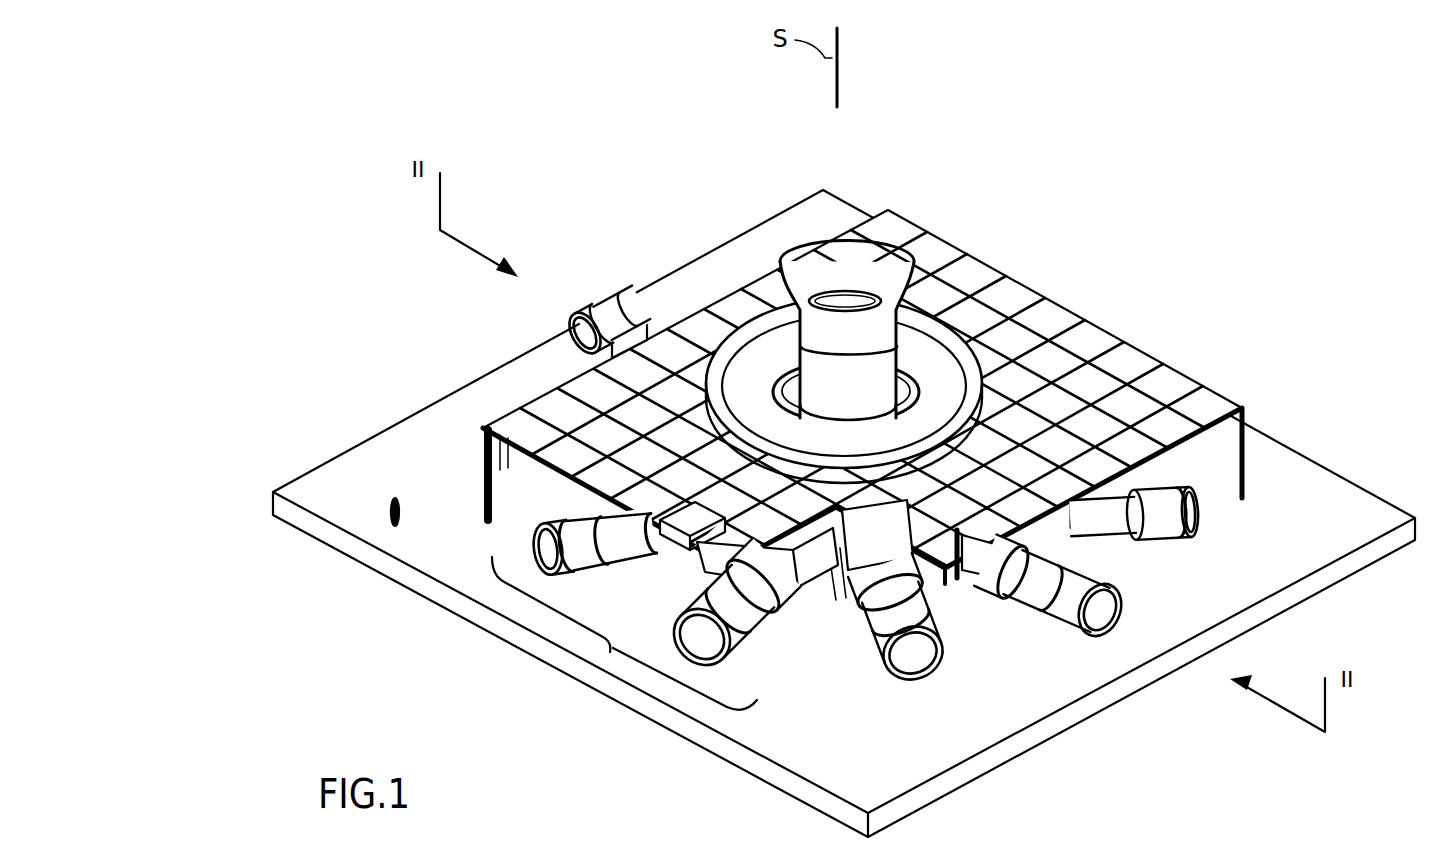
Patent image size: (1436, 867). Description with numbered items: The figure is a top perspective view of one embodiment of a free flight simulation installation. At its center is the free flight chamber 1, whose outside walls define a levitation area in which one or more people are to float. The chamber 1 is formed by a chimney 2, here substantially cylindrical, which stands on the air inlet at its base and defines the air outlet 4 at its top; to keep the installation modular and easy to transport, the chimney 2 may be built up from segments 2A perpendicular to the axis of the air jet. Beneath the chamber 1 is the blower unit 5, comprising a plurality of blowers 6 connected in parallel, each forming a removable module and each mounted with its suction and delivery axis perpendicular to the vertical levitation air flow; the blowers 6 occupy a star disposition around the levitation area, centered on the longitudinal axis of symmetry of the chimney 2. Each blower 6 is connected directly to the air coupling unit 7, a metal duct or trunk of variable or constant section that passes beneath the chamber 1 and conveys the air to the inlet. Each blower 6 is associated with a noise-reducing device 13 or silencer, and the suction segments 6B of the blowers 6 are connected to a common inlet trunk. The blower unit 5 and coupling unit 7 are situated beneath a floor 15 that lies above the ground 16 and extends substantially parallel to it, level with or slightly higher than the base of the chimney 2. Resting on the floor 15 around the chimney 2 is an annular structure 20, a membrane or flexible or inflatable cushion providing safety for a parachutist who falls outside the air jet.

The free flight chamber 1 is at (862, 357).
The chimney 2 is at (941, 308).
The segments 2A is at (917, 258).
The air outlet 4 is at (888, 278).
The blower unit 5 is at (608, 652).
The blower 6 is at (890, 500).
The suction segments 6B is at (917, 660).
The air coupling unit 7 is at (835, 565).
The noise-reducing device 13 is at (620, 330).
The floor 15 is at (1143, 365).
The ground 16 is at (1320, 493).
The annular structure 20 is at (752, 367).